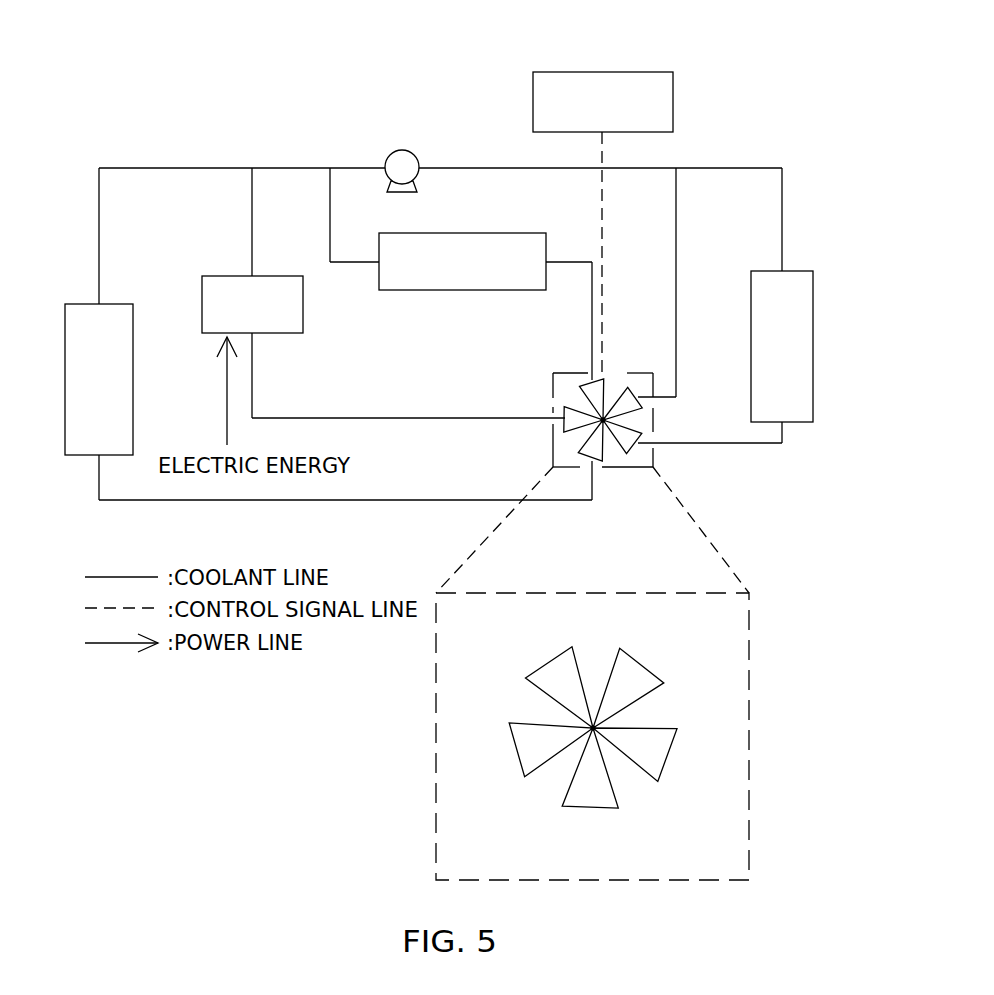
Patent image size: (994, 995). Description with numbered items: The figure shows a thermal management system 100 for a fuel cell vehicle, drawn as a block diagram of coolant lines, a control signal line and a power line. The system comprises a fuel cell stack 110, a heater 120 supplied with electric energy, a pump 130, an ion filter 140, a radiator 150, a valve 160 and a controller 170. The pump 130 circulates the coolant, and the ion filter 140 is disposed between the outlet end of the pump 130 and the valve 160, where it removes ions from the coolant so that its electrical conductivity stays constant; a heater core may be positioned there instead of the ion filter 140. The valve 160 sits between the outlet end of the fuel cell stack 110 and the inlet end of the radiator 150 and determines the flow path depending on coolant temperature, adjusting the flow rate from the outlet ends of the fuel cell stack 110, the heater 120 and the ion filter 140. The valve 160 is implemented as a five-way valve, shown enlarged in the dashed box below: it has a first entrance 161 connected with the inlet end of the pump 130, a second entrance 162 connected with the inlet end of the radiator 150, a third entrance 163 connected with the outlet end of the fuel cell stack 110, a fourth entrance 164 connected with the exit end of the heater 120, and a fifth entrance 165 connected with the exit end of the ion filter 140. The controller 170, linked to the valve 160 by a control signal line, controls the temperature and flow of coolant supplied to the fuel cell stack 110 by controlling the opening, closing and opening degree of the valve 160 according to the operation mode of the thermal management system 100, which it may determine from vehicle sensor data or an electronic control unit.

The thermal management system 100 is at (200, 37).
The fuel cell stack 110 is at (71, 304).
The heater 120 is at (213, 276).
The pump 130 is at (390, 153).
The ion filter 140 is at (483, 233).
The radiator 150 is at (752, 271).
The valve 160 is at (654, 420).
The first entrance 161 is at (641, 659).
The second entrance 162 is at (672, 752).
The third entrance 163 is at (590, 812).
The fourth entrance 164 is at (516, 752).
The fifth entrance 165 is at (547, 660).
The controller 170 is at (632, 72).